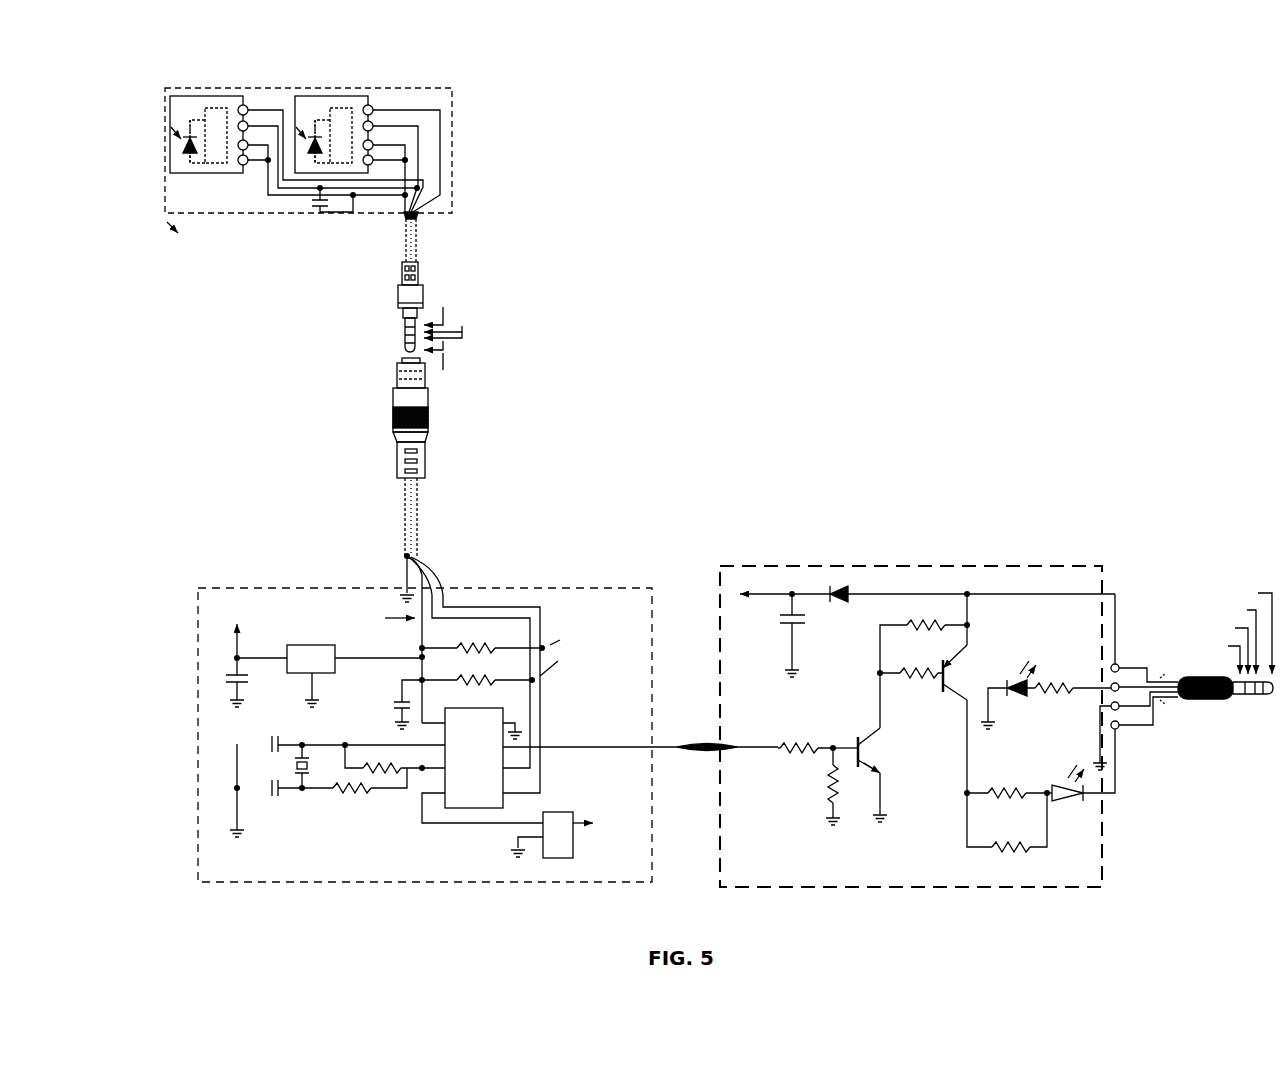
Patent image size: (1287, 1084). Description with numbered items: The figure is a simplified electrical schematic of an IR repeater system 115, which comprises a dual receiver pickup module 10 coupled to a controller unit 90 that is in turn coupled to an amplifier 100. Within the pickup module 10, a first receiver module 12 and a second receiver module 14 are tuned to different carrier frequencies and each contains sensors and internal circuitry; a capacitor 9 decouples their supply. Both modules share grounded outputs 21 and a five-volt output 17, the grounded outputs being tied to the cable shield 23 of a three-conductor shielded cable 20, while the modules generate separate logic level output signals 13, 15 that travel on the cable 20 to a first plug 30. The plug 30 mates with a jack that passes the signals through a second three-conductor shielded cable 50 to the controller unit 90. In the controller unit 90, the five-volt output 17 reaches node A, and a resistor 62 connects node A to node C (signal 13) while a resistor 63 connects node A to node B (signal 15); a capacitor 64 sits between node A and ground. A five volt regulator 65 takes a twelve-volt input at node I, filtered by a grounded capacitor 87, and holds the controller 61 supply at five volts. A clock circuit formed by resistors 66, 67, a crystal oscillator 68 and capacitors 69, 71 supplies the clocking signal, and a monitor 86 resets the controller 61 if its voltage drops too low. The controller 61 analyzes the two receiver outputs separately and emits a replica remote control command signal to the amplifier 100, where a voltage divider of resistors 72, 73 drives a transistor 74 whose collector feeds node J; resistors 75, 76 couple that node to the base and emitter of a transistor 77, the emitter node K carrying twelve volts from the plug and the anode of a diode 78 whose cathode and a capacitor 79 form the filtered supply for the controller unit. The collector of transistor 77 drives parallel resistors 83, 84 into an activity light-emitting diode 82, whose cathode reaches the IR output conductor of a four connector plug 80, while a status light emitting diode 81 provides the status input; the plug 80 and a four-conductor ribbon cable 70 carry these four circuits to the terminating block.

The capacitor 9 is at (335, 214).
The dual receiver pickup module 10 is at (458, 89).
The first receiver module 12 is at (168, 112).
The logic level output signal of the first receiver module 13 is at (431, 179).
The second receiver module 14 is at (357, 103).
The logic level output signal of the second receiver module 15 is at (444, 182).
The 5-volt output 17 is at (421, 148).
The three-conductor shielded cable 20 is at (423, 244).
The grounded outputs 21 is at (266, 184).
The cable shield / ground output 23 is at (398, 219).
The first plug 30 is at (392, 343).
The three-conductor shielded cable 50 is at (400, 522).
The controller 61 is at (497, 712).
The resistor 62 is at (499, 635).
The resistor 63 is at (498, 668).
The capacitor 64 is at (395, 695).
The five volt regulator 65 is at (324, 620).
The resistor 66 is at (317, 797).
The resistor 67 is at (407, 792).
The crystal oscillator 68 is at (314, 768).
The capacitor 69 is at (272, 808).
The four-conductor ribbon cable 70 is at (1166, 722).
The capacitor 71 is at (282, 741).
The resistor 72 is at (795, 735).
The resistor 73 is at (823, 797).
The transistor 74 is at (895, 731).
The resistor 75 is at (878, 688).
The resistor 76 is at (948, 618).
The transistor 77 is at (960, 678).
The diode 78 is at (838, 612).
The capacitor 79 is at (768, 620).
The four connector plug 80 is at (1220, 710).
The light emitting diode 81 is at (1045, 660).
The activity light-emitting diode 82 is at (1062, 812).
The resistor 83 is at (968, 800).
The resistor 84 is at (975, 853).
The monitor 86 is at (573, 852).
The capacitor 87 is at (218, 686).
The controller unit 90 is at (521, 586).
The amplifier 100 is at (973, 562).
The IR repeater system 115 is at (741, 172).